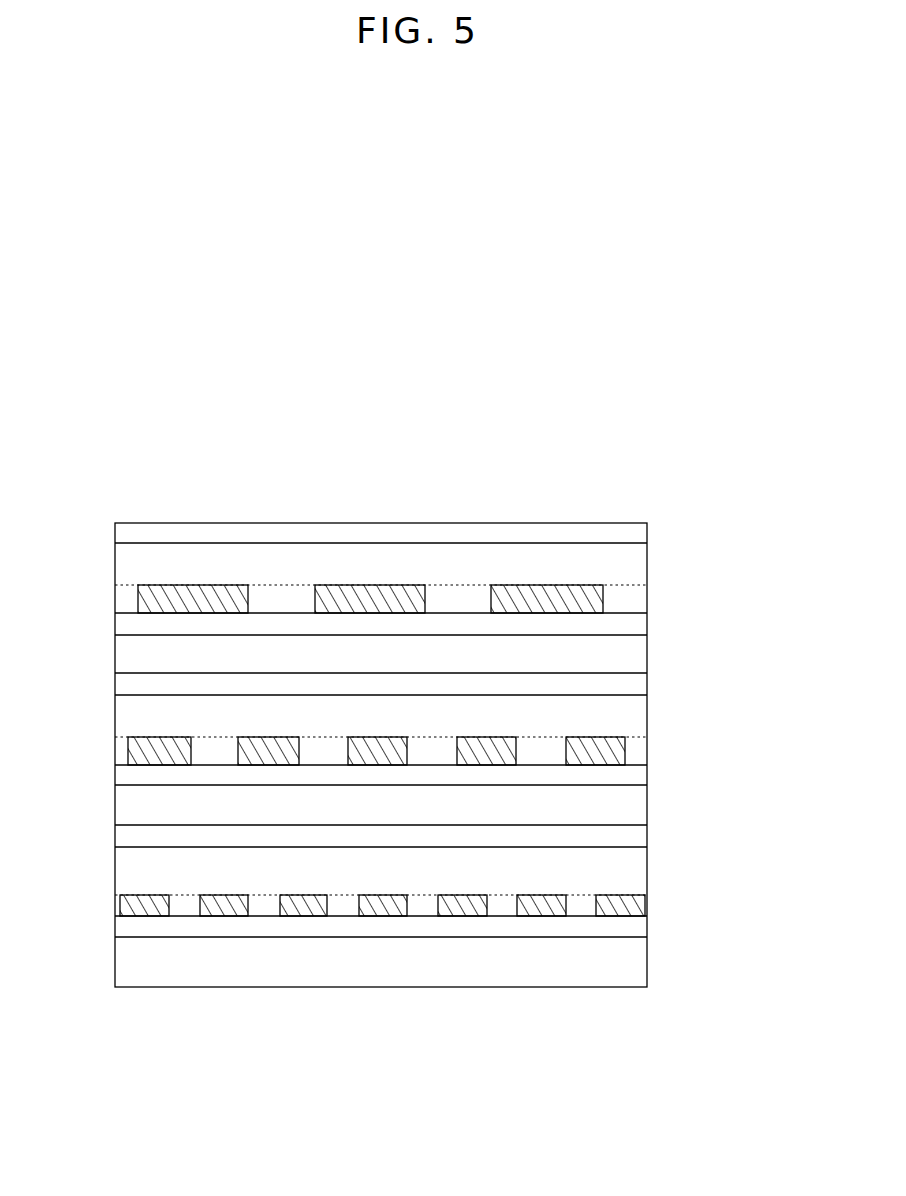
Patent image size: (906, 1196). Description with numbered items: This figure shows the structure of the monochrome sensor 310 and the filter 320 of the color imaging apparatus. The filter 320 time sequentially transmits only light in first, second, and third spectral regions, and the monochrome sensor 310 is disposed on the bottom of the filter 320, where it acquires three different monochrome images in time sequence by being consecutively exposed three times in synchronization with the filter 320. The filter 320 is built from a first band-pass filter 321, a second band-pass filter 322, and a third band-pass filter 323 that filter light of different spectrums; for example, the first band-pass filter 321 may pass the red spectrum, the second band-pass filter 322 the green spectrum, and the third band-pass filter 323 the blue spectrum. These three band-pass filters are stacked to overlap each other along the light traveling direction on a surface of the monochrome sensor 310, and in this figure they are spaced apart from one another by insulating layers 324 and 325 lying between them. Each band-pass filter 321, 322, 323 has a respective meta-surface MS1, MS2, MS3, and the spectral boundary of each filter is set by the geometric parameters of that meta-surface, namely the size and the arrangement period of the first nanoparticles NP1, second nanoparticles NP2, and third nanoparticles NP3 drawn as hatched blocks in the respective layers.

The filter 320 is at (690, 482).
The first band-pass filter 321 is at (112, 524).
The second band-pass filter 322 is at (112, 674).
The third band-pass filter 323 is at (112, 826).
The insulating layer 324 is at (118, 656).
The insulating layer 325 is at (118, 806).
The monochrome sensor 310 is at (118, 961).
The first nanoparticles NP1 is at (192, 585).
The second nanoparticles NP2 is at (272, 743).
The third nanoparticles NP3 is at (378, 916).
The meta-surface MS1 is at (652, 585).
The meta-surface MS2 is at (652, 737).
The meta-surface MS3 is at (652, 895).